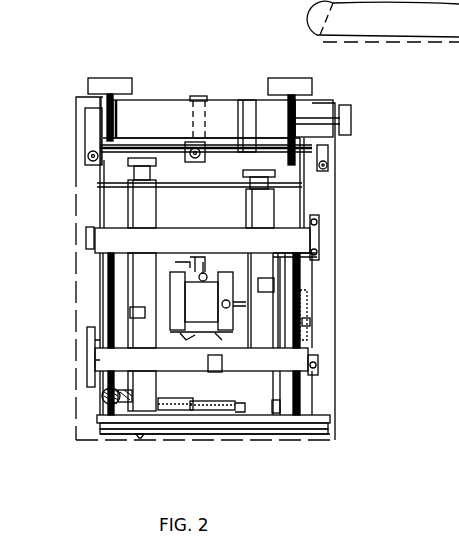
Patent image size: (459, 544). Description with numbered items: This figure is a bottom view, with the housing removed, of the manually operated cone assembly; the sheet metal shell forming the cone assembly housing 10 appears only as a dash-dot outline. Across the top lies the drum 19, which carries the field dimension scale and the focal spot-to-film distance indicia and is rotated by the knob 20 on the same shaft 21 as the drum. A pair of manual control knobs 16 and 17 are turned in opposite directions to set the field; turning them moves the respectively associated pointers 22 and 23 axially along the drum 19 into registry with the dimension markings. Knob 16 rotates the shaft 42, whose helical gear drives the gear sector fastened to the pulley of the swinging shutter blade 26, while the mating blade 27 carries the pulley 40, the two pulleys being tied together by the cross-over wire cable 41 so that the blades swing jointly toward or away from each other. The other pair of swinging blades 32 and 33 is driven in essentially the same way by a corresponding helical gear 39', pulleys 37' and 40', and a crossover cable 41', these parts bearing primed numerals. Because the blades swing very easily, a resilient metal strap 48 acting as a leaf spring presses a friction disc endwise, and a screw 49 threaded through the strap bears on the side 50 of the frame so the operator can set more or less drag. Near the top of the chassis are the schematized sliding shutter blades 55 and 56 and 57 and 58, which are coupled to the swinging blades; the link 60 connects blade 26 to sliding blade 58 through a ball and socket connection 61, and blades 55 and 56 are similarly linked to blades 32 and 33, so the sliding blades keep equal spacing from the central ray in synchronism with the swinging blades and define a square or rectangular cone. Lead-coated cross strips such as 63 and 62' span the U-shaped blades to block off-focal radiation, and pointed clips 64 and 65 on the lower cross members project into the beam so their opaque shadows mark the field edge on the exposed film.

The cone assembly housing 10 is at (335, 270).
The manual control knob 16 is at (290, 78).
The manual control knob 17 is at (110, 78).
The drum 19 is at (162, 100).
The knob 20 is at (351, 120).
The shaft 21 is at (322, 118).
The pointer 22 is at (246, 100).
The pointer 23 is at (199, 96).
The shutter blade 26 is at (316, 242).
The shutter blade 27 is at (300, 380).
The shutter blade 32 is at (154, 291).
The shutter blade 33 is at (271, 334).
The pulley 37' is at (175, 393).
The helical gear 39' is at (83, 406).
The pulley 40 is at (320, 307).
The pulley 40' is at (214, 447).
The cross-over wire cable 41 is at (330, 300).
The cross-over wire cable 41' is at (217, 394).
The shaft 42 is at (302, 185).
The resilient metal strap 48 is at (296, 436).
The screw 49 is at (265, 434).
The side of the cone assembly frame 50 is at (318, 415).
The sliding shutter blade 55 is at (202, 288).
The sliding shutter blade 56 is at (240, 284).
The sliding shutter blade 57 is at (185, 344).
The sliding shutter blade 58 is at (190, 262).
The link 60 is at (246, 216).
The ball and socket connection 61 is at (206, 262).
The cross strip 62' is at (165, 193).
The cross strip 63 is at (247, 192).
The pointed clip 64 is at (176, 258).
The pointed clip 65 is at (158, 320).